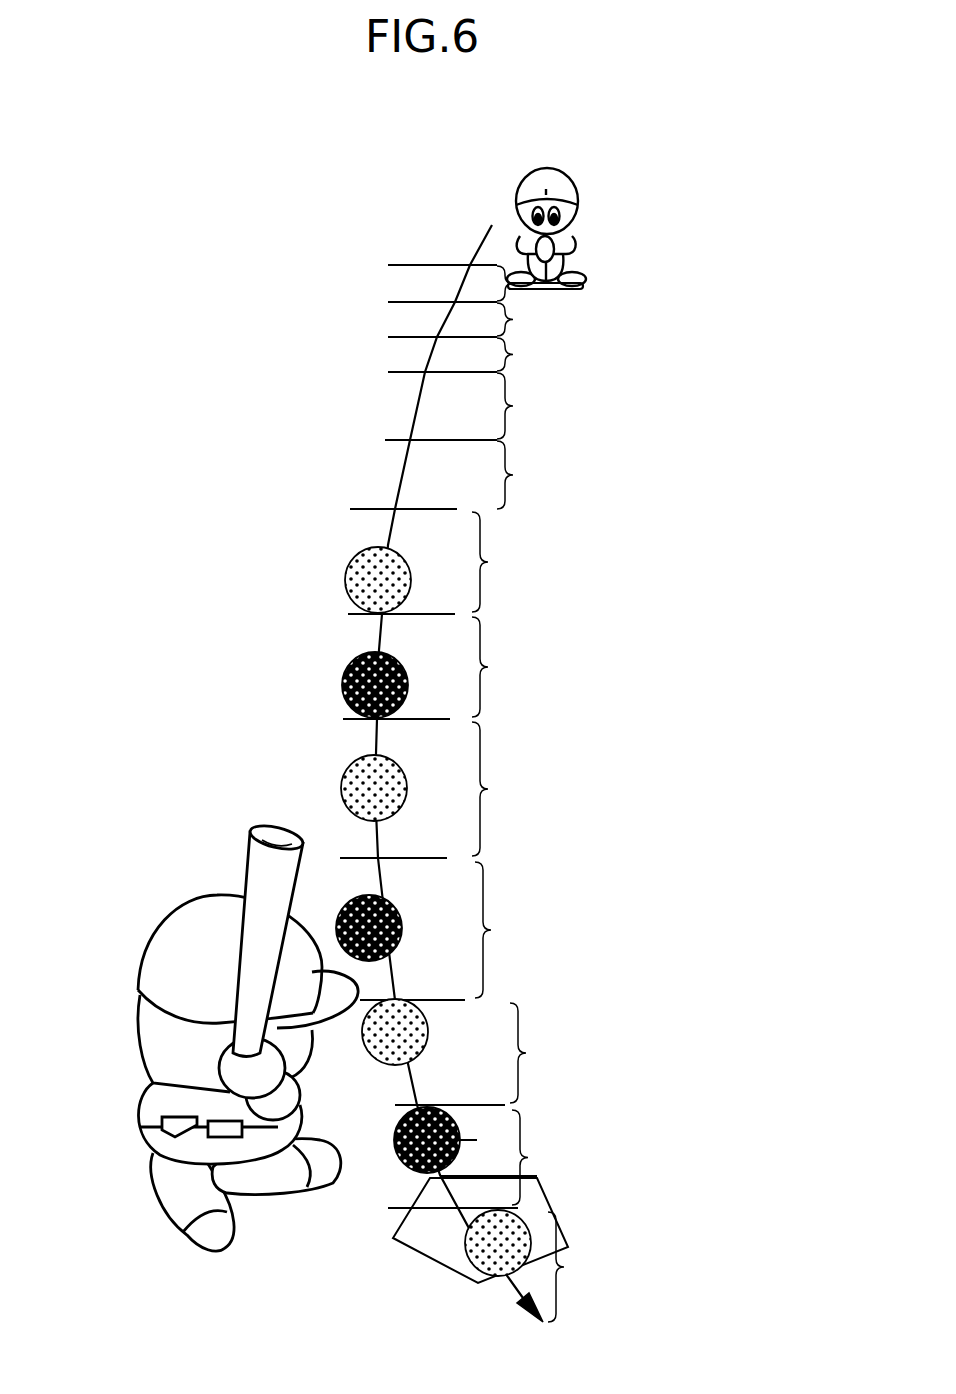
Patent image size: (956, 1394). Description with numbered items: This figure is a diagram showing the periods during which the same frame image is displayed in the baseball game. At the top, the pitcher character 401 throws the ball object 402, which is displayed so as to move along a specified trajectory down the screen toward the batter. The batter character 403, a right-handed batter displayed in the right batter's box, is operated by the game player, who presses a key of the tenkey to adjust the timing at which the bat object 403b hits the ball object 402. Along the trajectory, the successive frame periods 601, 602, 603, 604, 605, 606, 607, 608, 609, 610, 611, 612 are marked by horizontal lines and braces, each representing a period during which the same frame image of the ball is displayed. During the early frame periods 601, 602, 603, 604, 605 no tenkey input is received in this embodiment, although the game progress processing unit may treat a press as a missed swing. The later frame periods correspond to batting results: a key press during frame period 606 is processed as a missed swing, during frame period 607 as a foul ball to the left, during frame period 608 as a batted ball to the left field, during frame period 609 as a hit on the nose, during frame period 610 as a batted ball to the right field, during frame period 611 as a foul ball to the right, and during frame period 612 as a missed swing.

The pitcher character 401 is at (552, 168).
The ball object 402 is at (350, 563).
The batter character 403 is at (153, 943).
The bat object 403b is at (257, 877).
The frame period 601 is at (515, 287).
The frame period 602 is at (485, 322).
The frame period 603 is at (485, 357).
The frame period 604 is at (485, 405).
The frame period 605 is at (483, 474).
The frame period 606 is at (452, 560).
The frame period 607 is at (448, 666).
The frame period 608 is at (448, 787).
The frame period 609 is at (448, 928).
The frame period 610 is at (477, 1051).
The frame period 611 is at (494, 1155).
The frame period 612 is at (509, 1249).